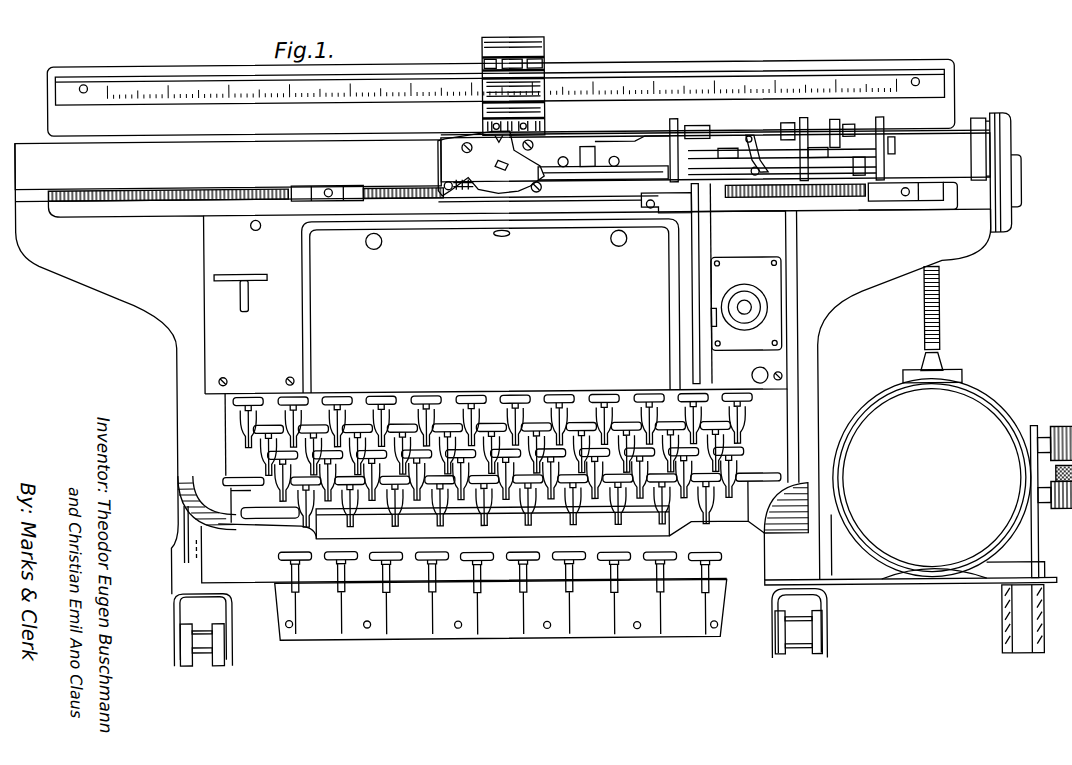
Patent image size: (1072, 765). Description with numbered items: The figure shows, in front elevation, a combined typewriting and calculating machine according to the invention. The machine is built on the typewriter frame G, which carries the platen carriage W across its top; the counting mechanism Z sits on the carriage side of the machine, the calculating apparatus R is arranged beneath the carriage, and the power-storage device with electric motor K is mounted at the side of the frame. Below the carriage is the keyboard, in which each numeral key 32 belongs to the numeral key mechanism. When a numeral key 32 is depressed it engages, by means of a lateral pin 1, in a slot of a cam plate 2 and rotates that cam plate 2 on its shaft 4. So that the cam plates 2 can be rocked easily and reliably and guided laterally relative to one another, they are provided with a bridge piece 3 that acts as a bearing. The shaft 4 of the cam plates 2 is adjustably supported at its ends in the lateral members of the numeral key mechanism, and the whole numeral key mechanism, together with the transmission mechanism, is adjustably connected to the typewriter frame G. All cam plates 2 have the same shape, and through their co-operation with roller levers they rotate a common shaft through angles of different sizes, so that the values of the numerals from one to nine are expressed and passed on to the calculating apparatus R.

The platen carriage W is at (501, 97).
The counting mechanism Z is at (521, 90).
The calculating apparatus R is at (577, 284).
The typewriter frame G is at (536, 400).
The power-storage device with electric motor K is at (951, 422).
The numeral key 32 is at (462, 395).
The lateral pin 1 is at (718, 276).
The cam plate 2 is at (750, 294).
The bridge piece 3 is at (721, 338).
The shaft 4 is at (767, 339).